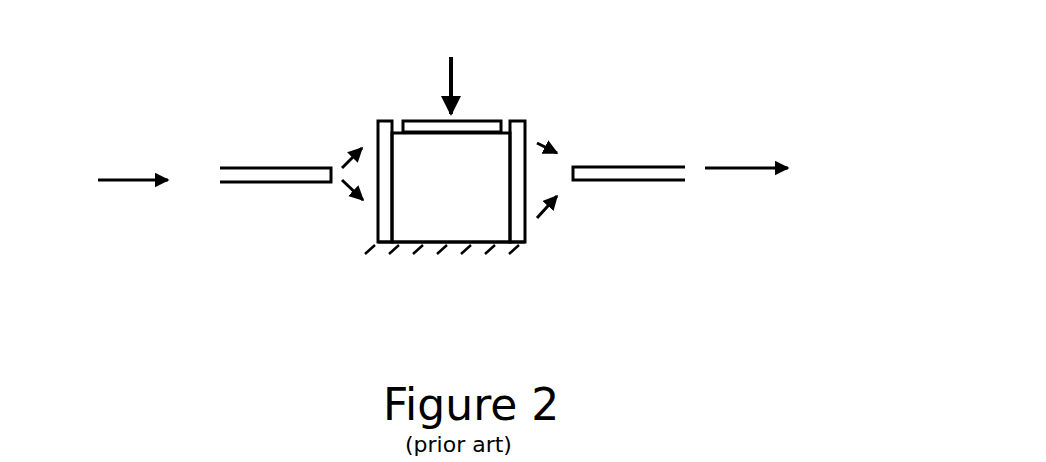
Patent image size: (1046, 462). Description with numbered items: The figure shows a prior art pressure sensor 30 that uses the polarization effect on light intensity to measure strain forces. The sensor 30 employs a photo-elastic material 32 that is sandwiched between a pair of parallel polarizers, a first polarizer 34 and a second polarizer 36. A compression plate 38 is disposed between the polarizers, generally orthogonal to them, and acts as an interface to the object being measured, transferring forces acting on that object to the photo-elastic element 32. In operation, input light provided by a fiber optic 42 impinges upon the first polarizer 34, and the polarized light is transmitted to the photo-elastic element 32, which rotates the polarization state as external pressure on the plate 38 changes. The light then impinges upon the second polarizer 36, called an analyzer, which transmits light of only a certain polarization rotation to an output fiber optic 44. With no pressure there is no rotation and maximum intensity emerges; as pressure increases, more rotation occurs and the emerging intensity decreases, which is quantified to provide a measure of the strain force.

The pressure sensor 30 is at (612, 94).
The photo-elastic material 32 is at (408, 203).
The first polarizer 34 is at (380, 118).
The second polarizer 36 is at (520, 118).
The compression plate 38 is at (467, 127).
The fiber optic 42 is at (258, 172).
The output fiber optic 44 is at (618, 167).